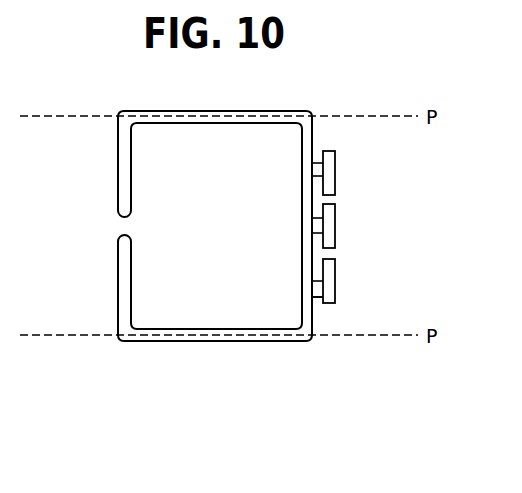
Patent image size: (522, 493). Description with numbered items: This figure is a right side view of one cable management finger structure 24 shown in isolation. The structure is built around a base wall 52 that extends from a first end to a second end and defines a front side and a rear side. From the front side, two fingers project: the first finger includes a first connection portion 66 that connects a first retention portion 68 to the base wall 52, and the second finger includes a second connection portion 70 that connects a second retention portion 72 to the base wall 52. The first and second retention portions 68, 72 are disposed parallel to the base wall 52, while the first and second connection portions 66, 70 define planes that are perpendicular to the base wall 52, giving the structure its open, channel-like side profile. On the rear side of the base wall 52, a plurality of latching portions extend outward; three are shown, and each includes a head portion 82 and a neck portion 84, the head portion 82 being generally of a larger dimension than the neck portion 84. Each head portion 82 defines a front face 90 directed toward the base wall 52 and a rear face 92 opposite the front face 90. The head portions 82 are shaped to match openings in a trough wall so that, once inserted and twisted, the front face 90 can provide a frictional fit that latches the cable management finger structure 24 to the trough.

The cable management finger structure 24 is at (243, 360).
The base wall 52 is at (302, 255).
The first connection portion 66 is at (199, 110).
The first retention portion 68 is at (123, 175).
The second connection portion 70 is at (211, 342).
The second retention portion 72 is at (123, 290).
The head portion 82 is at (335, 280).
The neck portion 84 is at (320, 296).
The front face 90 is at (322, 184).
The rear face 92 is at (335, 168).